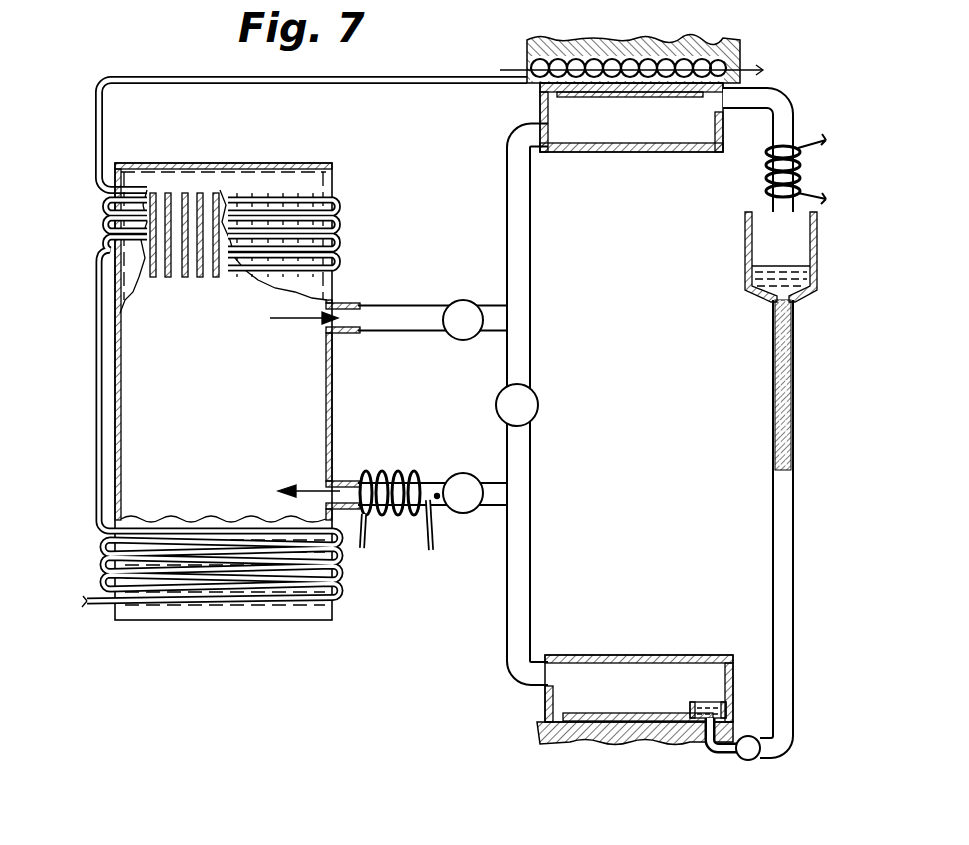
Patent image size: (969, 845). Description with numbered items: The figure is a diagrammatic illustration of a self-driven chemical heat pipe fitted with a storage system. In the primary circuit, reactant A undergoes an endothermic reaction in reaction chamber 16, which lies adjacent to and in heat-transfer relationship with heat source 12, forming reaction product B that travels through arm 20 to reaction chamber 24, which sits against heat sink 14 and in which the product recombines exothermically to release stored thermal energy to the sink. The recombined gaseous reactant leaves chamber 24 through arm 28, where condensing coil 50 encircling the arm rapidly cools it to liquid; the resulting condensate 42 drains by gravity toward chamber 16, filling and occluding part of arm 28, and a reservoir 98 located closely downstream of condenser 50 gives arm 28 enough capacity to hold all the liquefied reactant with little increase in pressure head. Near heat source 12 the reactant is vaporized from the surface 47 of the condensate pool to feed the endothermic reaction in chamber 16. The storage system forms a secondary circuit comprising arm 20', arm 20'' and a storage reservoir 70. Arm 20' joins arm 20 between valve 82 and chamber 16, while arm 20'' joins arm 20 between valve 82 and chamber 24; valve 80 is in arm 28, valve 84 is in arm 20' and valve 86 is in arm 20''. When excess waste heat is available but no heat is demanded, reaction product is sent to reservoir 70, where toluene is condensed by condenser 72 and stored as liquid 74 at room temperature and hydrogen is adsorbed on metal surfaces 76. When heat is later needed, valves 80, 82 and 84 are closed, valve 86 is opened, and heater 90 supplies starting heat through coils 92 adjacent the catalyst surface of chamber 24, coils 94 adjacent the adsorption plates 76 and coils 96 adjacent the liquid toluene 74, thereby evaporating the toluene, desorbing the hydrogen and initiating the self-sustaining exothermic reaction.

The heat source 12 is at (641, 735).
The heat sink 14 is at (728, 45).
The reaction chamber 16 is at (615, 678).
The system arm 20 is at (565, 404).
The arm 20' is at (392, 540).
The arm 20'' is at (388, 298).
The reaction chamber 24 is at (652, 120).
The arm 28 is at (776, 364).
The condensate 42 is at (778, 409).
The surface of the condensate pool 47 is at (712, 700).
The condensing coil 50 is at (803, 145).
The storage reservoir 70 is at (270, 158).
The condenser 72 is at (370, 528).
The liquid 74 is at (190, 545).
The metal surfaces 76 is at (218, 193).
The valve 80 is at (750, 762).
The valve 82 is at (537, 408).
The valve 84 is at (465, 474).
The valve 86 is at (462, 300).
The heater 90 is at (384, 66).
The coils 92 is at (522, 55).
The coils 94 is at (340, 246).
The coils 96 is at (340, 573).
The reservoir 98 is at (747, 253).